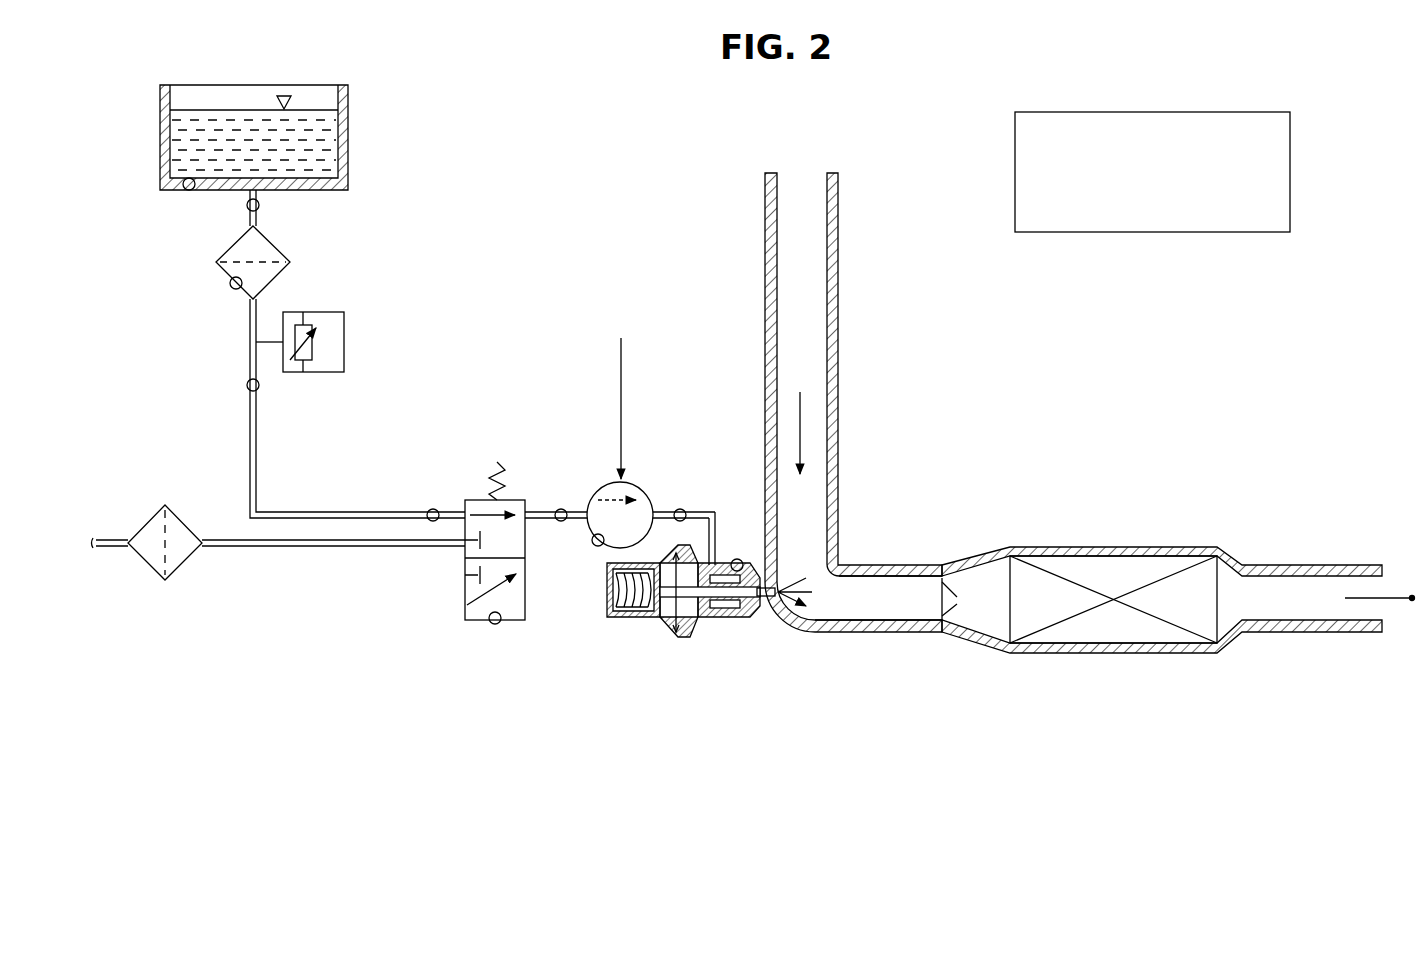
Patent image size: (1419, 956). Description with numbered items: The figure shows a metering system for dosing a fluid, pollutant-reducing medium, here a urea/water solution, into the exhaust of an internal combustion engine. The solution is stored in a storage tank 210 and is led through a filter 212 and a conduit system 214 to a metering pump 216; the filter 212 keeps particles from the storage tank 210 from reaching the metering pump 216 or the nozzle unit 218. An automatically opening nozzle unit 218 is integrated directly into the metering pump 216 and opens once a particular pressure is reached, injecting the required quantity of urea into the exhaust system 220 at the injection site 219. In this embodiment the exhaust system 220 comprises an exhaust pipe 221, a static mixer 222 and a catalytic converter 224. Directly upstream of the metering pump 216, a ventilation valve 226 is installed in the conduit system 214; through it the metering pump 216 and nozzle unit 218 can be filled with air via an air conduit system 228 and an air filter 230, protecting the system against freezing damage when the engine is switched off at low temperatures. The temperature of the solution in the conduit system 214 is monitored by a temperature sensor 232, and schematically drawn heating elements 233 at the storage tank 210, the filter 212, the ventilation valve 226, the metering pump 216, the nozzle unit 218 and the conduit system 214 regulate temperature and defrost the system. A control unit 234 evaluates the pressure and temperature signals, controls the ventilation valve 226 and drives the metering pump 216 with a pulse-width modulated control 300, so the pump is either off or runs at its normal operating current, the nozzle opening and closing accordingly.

The storage tank 210 is at (348, 150).
The filter 212 is at (270, 248).
The conduit system 214 is at (256, 443).
The metering pump 216 is at (654, 487).
The nozzle unit 218 is at (650, 626).
The injection site 219 is at (776, 606).
The exhaust system 220 is at (878, 644).
The exhaust pipe 221 is at (833, 443).
The static mixer 222 is at (962, 580).
The catalytic converter 224 is at (1143, 573).
The ventilation valve 226 is at (522, 496).
The air conduit system 228 is at (355, 546).
The air filter 230 is at (180, 553).
The temperature sensor 232 is at (344, 360).
The heating elements 233 is at (247, 208).
The control unit 234 is at (1147, 220).
The pulse-width modulated control 300 is at (621, 355).